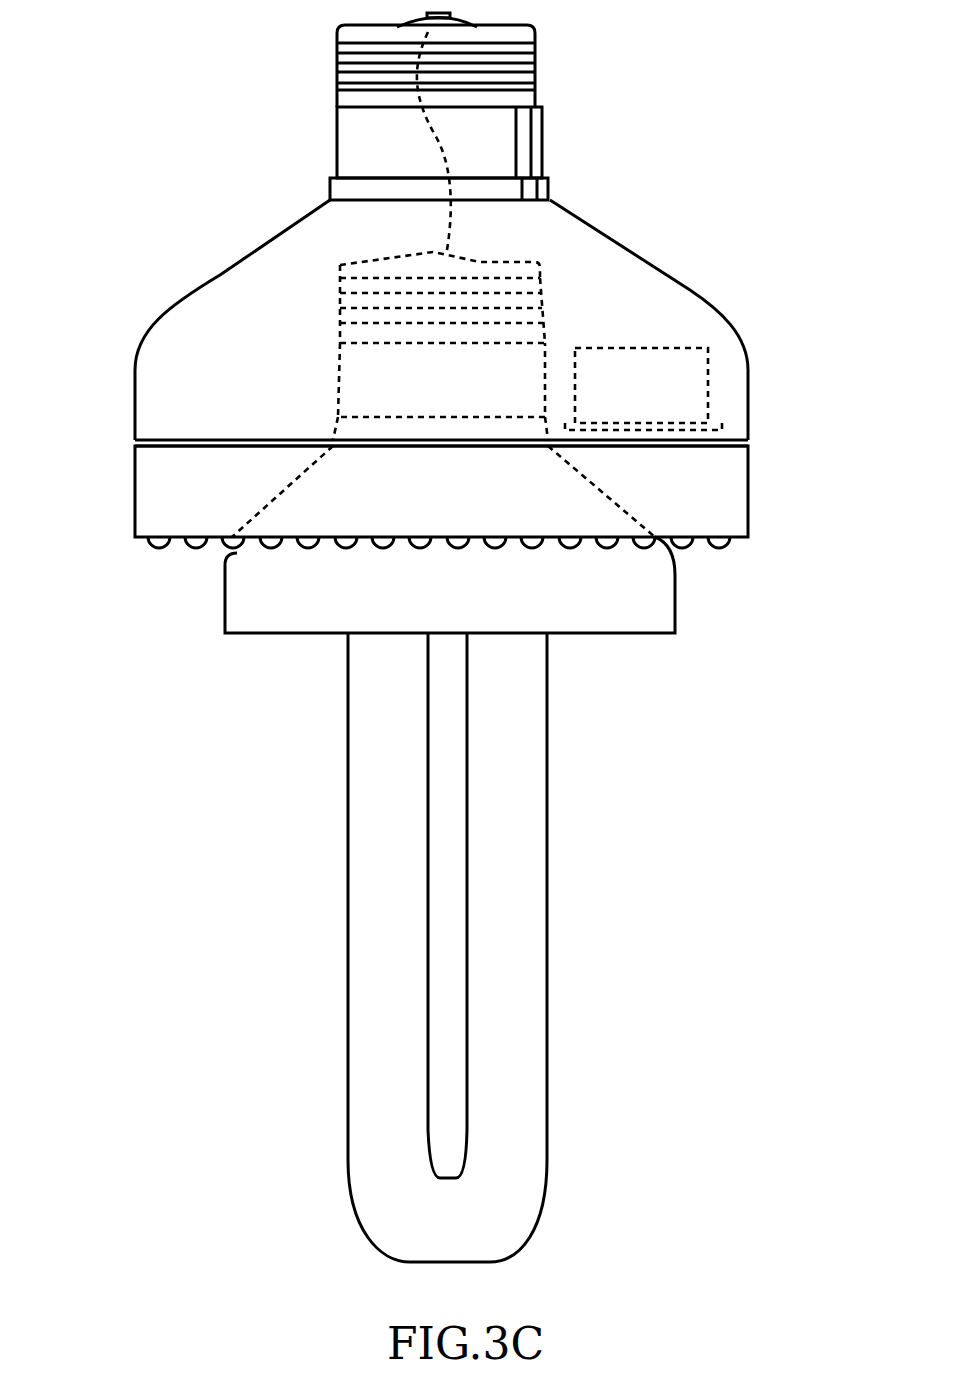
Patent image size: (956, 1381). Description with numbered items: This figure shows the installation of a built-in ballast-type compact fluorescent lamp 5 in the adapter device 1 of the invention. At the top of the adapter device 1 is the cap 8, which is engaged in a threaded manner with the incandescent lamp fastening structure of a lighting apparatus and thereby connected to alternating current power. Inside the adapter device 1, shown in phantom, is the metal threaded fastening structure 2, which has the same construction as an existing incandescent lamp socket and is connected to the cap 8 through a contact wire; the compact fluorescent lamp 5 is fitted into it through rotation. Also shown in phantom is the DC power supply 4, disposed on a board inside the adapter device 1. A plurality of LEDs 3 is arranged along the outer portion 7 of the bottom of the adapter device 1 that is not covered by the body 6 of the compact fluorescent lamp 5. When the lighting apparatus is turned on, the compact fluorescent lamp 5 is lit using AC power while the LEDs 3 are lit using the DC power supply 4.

The adapter device 1 is at (647, 157).
The threaded fastening structure 2 is at (335, 345).
The LEDs 3 is at (720, 545).
The DC power supply 4 is at (653, 347).
The built-in ballast-type compact fluorescent lamp 5 is at (593, 862).
The body 6 is at (675, 612).
The outer portion 7 is at (173, 553).
The cap 8 is at (540, 84).